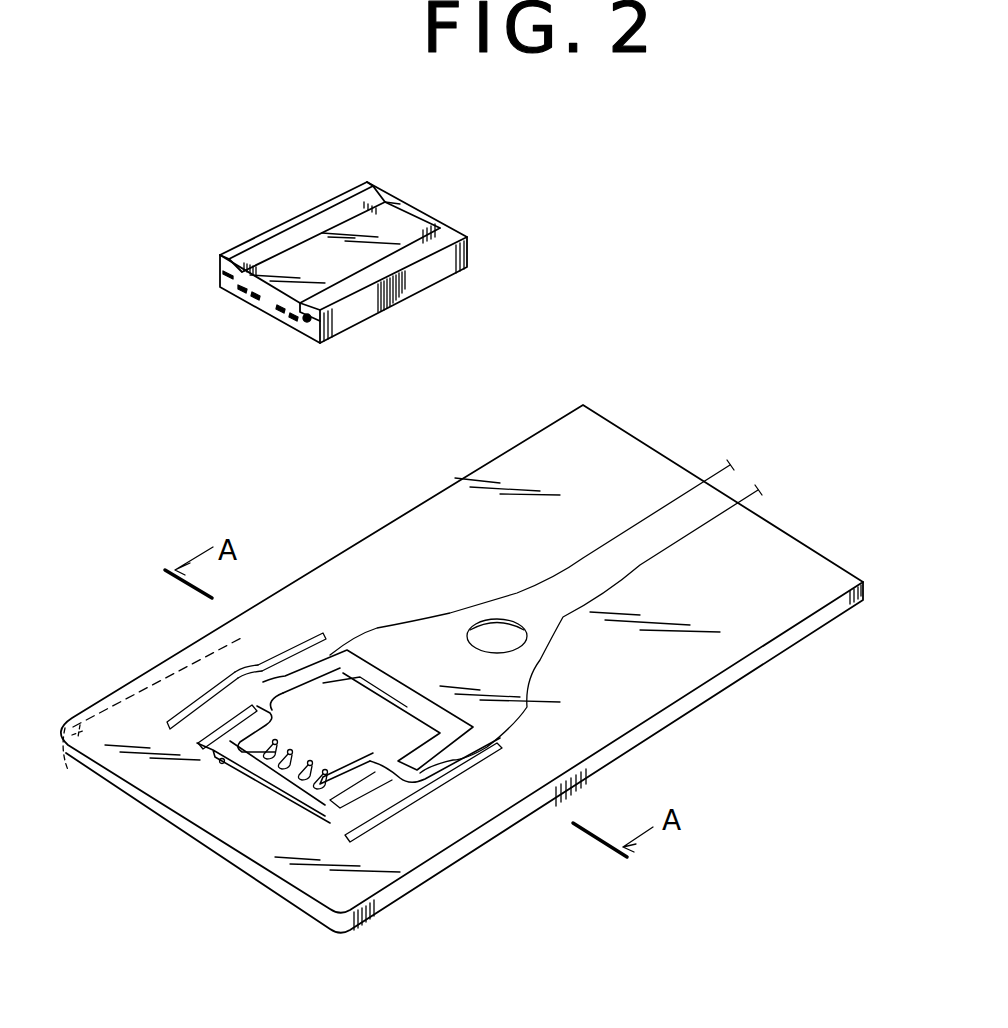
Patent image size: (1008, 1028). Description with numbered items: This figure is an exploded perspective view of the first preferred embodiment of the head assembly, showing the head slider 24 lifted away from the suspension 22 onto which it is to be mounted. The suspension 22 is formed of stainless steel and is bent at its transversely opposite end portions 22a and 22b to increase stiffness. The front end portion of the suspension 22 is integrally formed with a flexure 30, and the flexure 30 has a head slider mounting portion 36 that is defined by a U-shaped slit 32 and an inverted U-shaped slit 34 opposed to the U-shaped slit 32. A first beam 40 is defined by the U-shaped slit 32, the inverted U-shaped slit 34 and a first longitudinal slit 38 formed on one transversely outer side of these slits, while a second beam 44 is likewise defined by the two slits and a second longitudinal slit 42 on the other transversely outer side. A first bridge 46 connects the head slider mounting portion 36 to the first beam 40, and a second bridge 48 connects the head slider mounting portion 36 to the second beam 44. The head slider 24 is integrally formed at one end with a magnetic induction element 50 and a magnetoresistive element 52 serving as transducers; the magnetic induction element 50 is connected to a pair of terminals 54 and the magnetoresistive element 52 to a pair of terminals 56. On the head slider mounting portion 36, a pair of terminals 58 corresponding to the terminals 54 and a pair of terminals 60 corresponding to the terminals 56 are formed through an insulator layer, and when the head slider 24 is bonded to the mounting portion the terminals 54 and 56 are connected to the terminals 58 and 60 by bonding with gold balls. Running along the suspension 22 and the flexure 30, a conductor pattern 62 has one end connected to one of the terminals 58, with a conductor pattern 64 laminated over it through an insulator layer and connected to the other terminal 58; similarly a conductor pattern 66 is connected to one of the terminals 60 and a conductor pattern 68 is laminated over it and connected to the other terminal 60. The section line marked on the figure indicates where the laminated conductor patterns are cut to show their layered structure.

The suspension 22 is at (532, 487).
The transversely opposite end portion 22a is at (760, 667).
The transversely opposite end portion 22b is at (135, 724).
The head slider 24 is at (402, 213).
The flexure 30 is at (283, 807).
The U-shaped slit 32 is at (222, 758).
The inverted U-shaped slit 34 is at (395, 684).
The head slider mounting portion 36 is at (340, 707).
The first longitudinal slit 38 is at (457, 782).
The first beam 40 is at (370, 810).
The second longitudinal slit 42 is at (297, 645).
The second beam 44 is at (214, 706).
The first bridge 46 is at (393, 780).
The second bridge 48 is at (218, 705).
The magnetic induction element 50 is at (307, 322).
The magnetoresistive element 52 is at (223, 277).
The terminals 54 is at (293, 320).
The terminals 56 is at (254, 297).
The terminals 58 is at (326, 777).
The terminals 60 is at (288, 746).
The conductor pattern 62 is at (658, 629).
The conductor pattern 64 is at (703, 528).
The conductor pattern 66 is at (532, 517).
The conductor pattern 68 is at (661, 507).